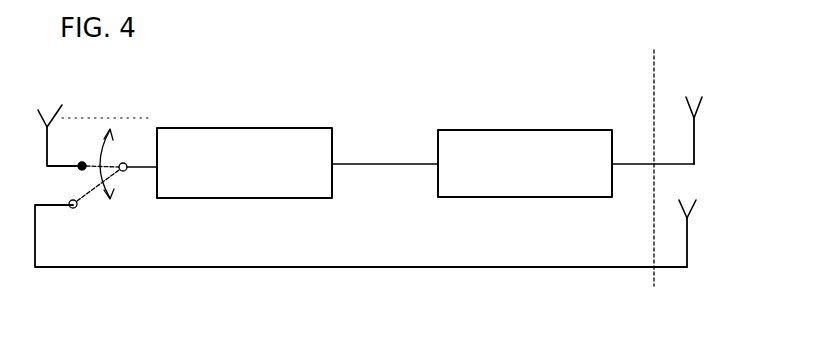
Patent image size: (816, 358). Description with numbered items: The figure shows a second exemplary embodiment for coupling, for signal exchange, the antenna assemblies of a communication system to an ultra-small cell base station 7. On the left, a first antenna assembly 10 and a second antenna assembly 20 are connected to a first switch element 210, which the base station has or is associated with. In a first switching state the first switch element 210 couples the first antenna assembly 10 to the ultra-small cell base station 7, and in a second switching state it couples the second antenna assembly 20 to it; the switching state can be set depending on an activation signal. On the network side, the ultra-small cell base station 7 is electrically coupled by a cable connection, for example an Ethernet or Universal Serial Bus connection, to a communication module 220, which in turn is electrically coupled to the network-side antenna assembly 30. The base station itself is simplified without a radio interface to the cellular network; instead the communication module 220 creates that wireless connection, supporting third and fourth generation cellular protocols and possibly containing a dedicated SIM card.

The first antenna assembly 10 is at (47, 126).
The first switch element 210 is at (140, 118).
The ultra-small cell base station 7 is at (245, 128).
The communication module 220 is at (487, 130).
The network-side antenna assembly 30 is at (696, 97).
The second antenna assembly 20 is at (677, 275).